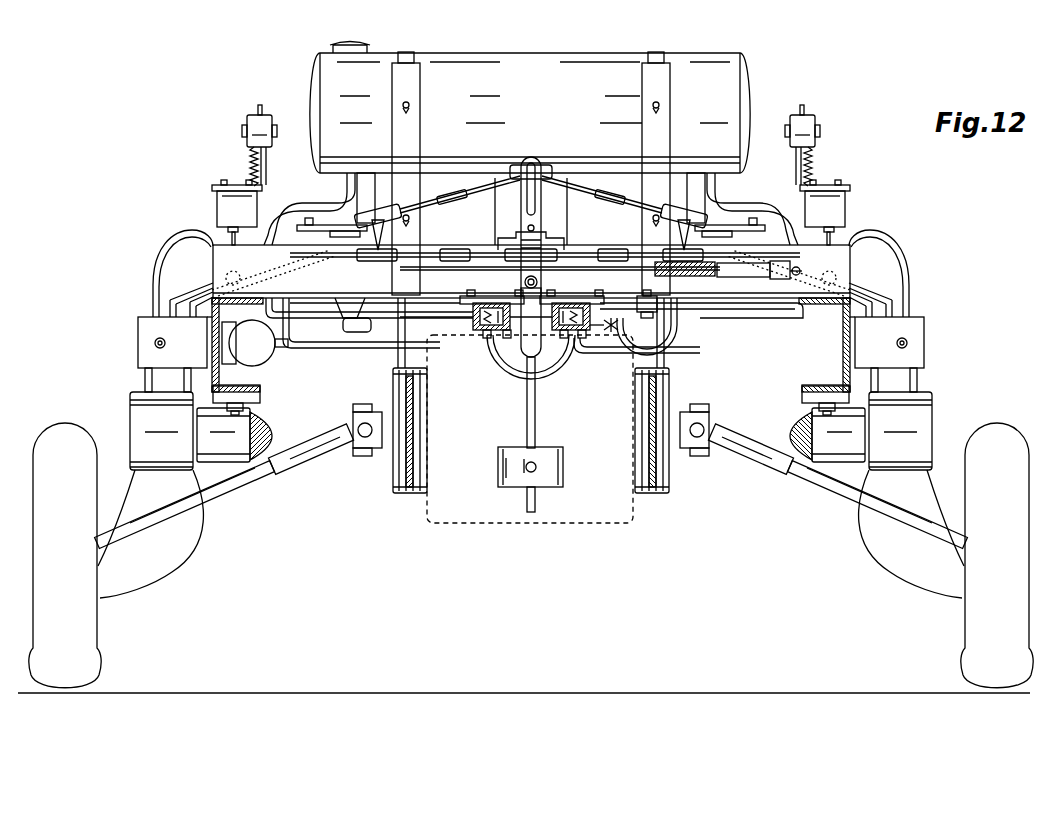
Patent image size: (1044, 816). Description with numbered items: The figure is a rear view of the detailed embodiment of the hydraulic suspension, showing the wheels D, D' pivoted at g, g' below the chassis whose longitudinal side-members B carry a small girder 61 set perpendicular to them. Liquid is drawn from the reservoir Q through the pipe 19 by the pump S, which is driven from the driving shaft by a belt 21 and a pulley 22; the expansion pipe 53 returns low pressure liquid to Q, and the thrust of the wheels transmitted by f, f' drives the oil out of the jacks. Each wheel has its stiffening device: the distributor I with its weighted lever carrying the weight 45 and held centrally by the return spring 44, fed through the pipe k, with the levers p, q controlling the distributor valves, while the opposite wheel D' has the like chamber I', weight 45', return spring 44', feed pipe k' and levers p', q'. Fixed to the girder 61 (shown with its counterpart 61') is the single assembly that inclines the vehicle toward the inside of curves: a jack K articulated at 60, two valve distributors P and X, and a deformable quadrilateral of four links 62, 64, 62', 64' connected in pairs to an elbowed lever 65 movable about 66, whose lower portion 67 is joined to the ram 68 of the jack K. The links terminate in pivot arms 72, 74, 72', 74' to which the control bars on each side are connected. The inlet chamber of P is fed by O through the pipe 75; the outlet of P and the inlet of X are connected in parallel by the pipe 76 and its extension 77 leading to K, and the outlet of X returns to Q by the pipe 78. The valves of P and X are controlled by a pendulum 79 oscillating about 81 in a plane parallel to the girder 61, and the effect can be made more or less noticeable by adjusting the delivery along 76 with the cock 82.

The liquid reservoir Q is at (338, 92).
The weight 45 is at (252, 136).
The weight 45' is at (814, 137).
The return spring 44 is at (229, 162).
The return spring 44' is at (832, 161).
The distributor I is at (225, 212).
The chamber I' is at (837, 212).
The expansion pipe 53 is at (287, 205).
The pipe 19 is at (362, 197).
The pivot arm 74 is at (356, 254).
The pivot arm 74' is at (726, 209).
The pivot arm 72 is at (424, 227).
The pivot arm 72' is at (625, 212).
The link 64 is at (452, 214).
The link 64' is at (610, 214).
The elbowed lever 65 is at (538, 220).
The pivot 66 is at (530, 233).
The lower portion of elbowed lever 67 is at (525, 283).
The pendulum pivot 81 is at (538, 286).
The pipe 78 is at (495, 212).
The jack K is at (737, 300).
The small girder 61 is at (531, 296).
The frame member 61' is at (774, 314).
The link 62 is at (545, 269).
The link 62' is at (580, 232).
The ram 68 is at (612, 271).
The articulation 60 is at (797, 277).
The longitudinal side-member B is at (138, 351).
The feed pipe k is at (168, 270).
The feed pipe k' is at (884, 270).
The lever p is at (168, 292).
The lever q is at (187, 287).
The lever p' is at (894, 287).
The lever q' is at (873, 277).
The distributor O is at (262, 352).
The pump S is at (357, 305).
The pipe 75 is at (313, 349).
The belt 21 is at (398, 360).
The pulley 22 is at (395, 400).
The valve distributor P is at (487, 338).
The valve distributor X is at (568, 340).
The pipe 76 is at (598, 350).
The cock 82 is at (619, 330).
The pipe extension 77 is at (676, 340).
The pendulum 79 is at (553, 474).
The pivot g is at (176, 427).
The pivot g' is at (885, 427).
The thrust member f is at (150, 534).
The axle housing f' is at (911, 534).
The wheel D is at (65, 534).
The wheel D' is at (997, 532).